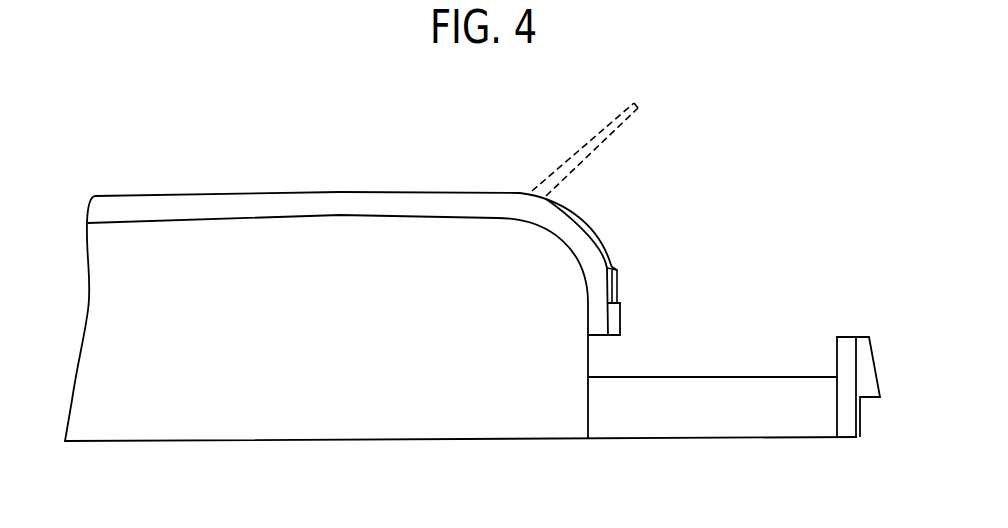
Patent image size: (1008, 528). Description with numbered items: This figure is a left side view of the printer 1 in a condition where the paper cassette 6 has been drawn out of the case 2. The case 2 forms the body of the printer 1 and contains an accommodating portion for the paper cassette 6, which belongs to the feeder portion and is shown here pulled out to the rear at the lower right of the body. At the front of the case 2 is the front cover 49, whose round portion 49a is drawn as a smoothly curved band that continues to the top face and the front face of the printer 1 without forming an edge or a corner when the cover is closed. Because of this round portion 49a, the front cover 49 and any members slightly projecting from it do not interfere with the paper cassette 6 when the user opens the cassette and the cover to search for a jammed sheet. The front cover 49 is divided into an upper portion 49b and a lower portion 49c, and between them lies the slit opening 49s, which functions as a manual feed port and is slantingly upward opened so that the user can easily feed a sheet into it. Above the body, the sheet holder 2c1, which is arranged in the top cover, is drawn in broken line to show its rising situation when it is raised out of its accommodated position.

The printer 1 is at (290, 175).
The case 2 is at (342, 417).
The sheet holder 2c1 is at (587, 145).
The paper cassette 6 is at (855, 326).
The front cover 49 is at (622, 233).
The round portion 49a is at (548, 198).
The upper portion 49b is at (585, 224).
The lower portion 49c is at (620, 317).
The slit opening 49s is at (623, 278).